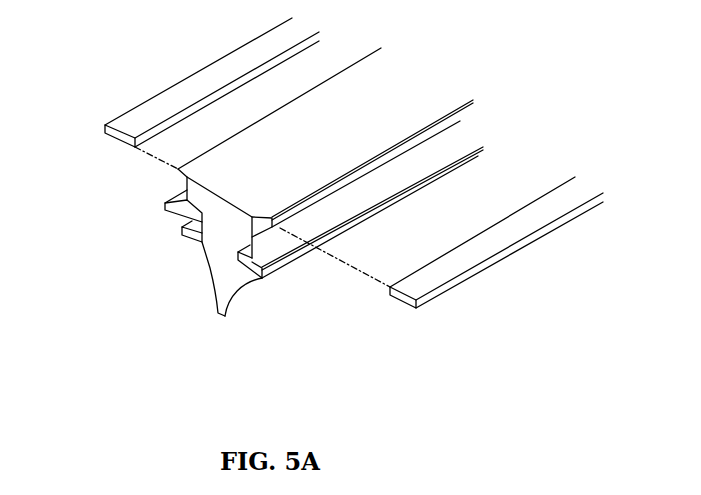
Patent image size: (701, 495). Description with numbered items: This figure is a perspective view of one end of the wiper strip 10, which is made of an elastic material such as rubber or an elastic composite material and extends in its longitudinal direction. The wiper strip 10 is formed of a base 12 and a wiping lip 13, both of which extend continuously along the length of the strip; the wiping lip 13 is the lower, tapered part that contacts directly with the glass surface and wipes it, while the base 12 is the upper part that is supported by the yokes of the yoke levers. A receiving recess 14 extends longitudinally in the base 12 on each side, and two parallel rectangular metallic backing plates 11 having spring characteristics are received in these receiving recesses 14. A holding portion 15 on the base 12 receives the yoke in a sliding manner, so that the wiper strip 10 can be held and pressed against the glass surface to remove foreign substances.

The wiper strip 10 is at (53, 39).
The backing plate 11 is at (150, 106).
The base 12 is at (198, 164).
The wiping lip 13 is at (245, 303).
The receiving recess 14 is at (390, 165).
The holding portion 15 is at (250, 247).